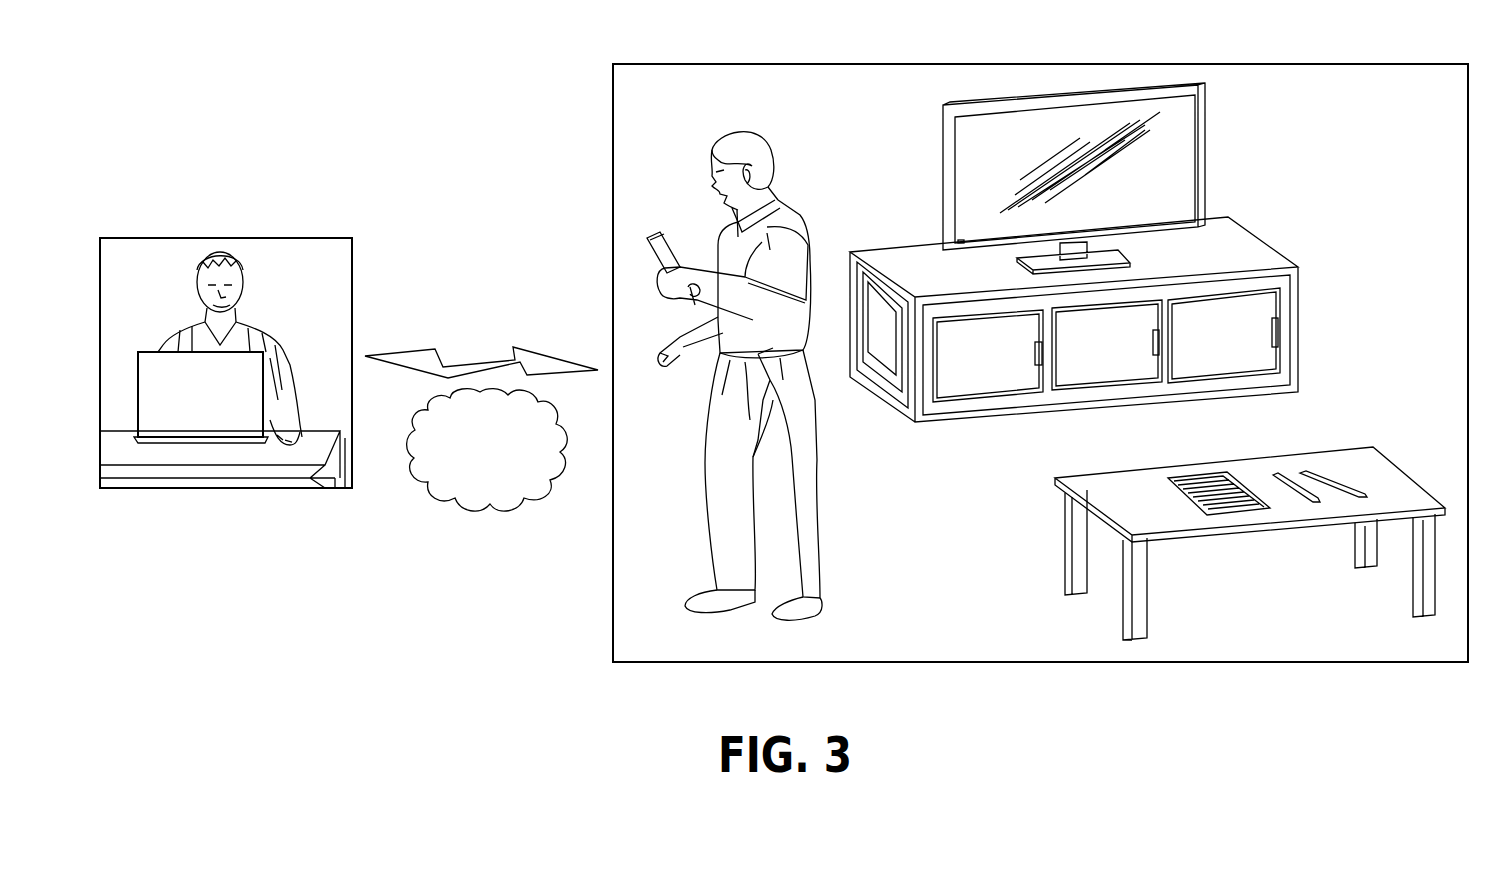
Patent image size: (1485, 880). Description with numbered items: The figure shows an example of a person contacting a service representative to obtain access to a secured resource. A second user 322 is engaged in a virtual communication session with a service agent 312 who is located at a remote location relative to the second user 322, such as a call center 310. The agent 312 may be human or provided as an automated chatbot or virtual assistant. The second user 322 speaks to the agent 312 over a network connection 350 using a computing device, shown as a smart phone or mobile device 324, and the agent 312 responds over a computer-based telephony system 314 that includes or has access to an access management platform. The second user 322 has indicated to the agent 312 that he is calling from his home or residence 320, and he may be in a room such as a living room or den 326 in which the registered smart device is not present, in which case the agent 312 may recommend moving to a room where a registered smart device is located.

The call center 310 is at (162, 268).
The service agent 312 is at (247, 268).
The computer-based telephony system 314 is at (221, 404).
The network connection 350 is at (483, 350).
The home or residence 320 is at (1325, 103).
The second user 322 is at (780, 147).
The smart phone/mobile device 324 is at (665, 235).
The living room or den 326 is at (1312, 315).